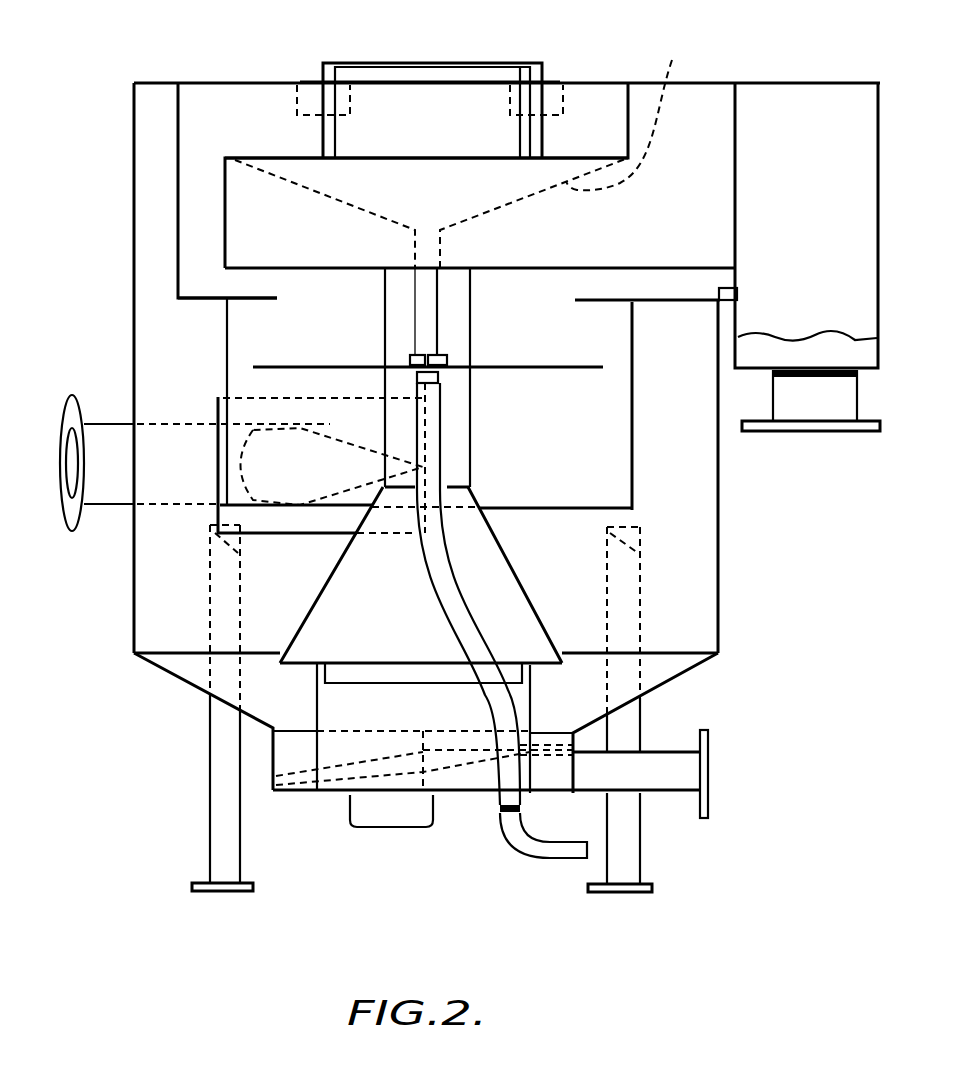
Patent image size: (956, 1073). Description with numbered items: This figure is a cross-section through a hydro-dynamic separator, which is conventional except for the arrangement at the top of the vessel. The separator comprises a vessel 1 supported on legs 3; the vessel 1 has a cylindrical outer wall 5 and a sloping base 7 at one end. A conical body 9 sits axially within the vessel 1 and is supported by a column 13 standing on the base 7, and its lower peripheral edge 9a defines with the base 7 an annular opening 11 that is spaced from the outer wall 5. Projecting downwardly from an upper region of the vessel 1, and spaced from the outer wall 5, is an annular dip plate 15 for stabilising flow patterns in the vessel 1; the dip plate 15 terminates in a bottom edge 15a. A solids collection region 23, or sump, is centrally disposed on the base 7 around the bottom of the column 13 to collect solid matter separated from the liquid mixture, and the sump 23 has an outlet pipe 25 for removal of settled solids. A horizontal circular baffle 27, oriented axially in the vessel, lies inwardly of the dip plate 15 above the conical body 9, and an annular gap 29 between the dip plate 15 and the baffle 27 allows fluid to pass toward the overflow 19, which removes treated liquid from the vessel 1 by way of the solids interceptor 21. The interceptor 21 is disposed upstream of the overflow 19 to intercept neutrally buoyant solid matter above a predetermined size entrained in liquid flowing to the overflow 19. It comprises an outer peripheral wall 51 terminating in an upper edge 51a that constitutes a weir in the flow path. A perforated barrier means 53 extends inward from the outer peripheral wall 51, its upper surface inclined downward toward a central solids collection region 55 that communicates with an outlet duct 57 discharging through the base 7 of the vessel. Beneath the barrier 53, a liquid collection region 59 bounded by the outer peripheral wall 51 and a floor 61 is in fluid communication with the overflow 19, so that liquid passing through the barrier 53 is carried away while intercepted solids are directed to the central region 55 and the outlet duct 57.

The vessel 1 is at (745, 578).
The legs 3 is at (218, 770).
The cylindrical outer wall 5 is at (720, 622).
The sloping base 7 is at (698, 667).
The conical body 9 is at (330, 605).
The lower peripheral edge 9a is at (280, 667).
The annular opening 11 is at (283, 697).
The column 13 is at (283, 747).
The annular dip plate 15 is at (633, 457).
The bottom edge 15a is at (632, 510).
The overflow 19 is at (782, 218).
The solids interceptor 21 is at (257, 140).
The solids collection region 23 is at (557, 780).
The outlet pipe 25 is at (680, 773).
The horizontal circular baffle 27 is at (280, 366).
The annular gap 29 is at (617, 368).
The outer peripheral wall 51 is at (225, 197).
The upper edge 51a is at (225, 157).
The perforated barrier means 53 is at (639, 105).
The central solids collection region 55 is at (428, 232).
The outlet duct 57 is at (433, 315).
The liquid collection region 59 is at (277, 230).
The floor 61 is at (307, 270).